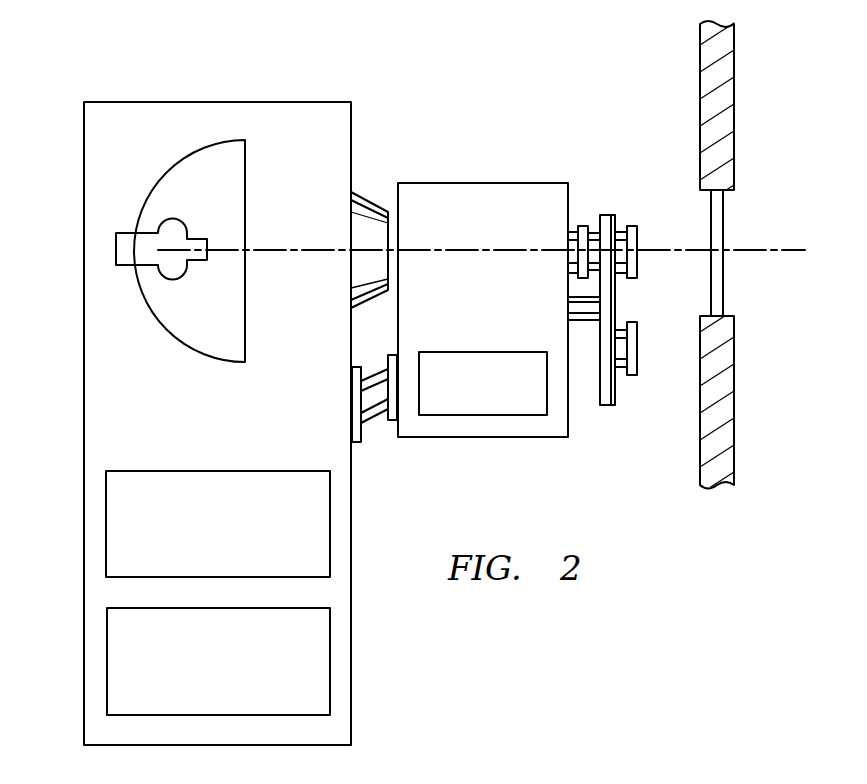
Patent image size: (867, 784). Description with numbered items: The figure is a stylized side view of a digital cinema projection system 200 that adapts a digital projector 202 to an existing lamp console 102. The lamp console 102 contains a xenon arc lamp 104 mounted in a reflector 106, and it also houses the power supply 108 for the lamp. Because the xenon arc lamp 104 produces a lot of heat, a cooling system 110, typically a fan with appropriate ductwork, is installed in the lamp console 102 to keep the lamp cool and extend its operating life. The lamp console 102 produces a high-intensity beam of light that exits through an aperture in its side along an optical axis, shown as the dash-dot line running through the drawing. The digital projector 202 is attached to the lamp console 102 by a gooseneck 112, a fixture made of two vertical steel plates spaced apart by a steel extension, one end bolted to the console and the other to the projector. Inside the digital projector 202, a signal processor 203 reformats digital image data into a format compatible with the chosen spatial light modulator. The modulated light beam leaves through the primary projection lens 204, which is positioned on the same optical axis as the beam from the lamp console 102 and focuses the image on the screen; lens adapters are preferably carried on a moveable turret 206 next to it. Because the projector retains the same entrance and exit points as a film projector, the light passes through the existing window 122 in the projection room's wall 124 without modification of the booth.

The digital cinema projection system 200 is at (274, 69).
The lamp console 102 is at (83, 430).
The xenon arc lamp 104 is at (133, 233).
The reflector 106 is at (190, 347).
The power supply 108 is at (242, 537).
The cooling system 110 is at (242, 674).
The gooseneck 112 is at (373, 430).
The digital projector 202 is at (493, 183).
The signal processor 203 is at (504, 397).
The primary projection lens 204 is at (582, 226).
The turret 206 is at (617, 392).
The window 122 is at (725, 272).
The wall 124 is at (735, 107).